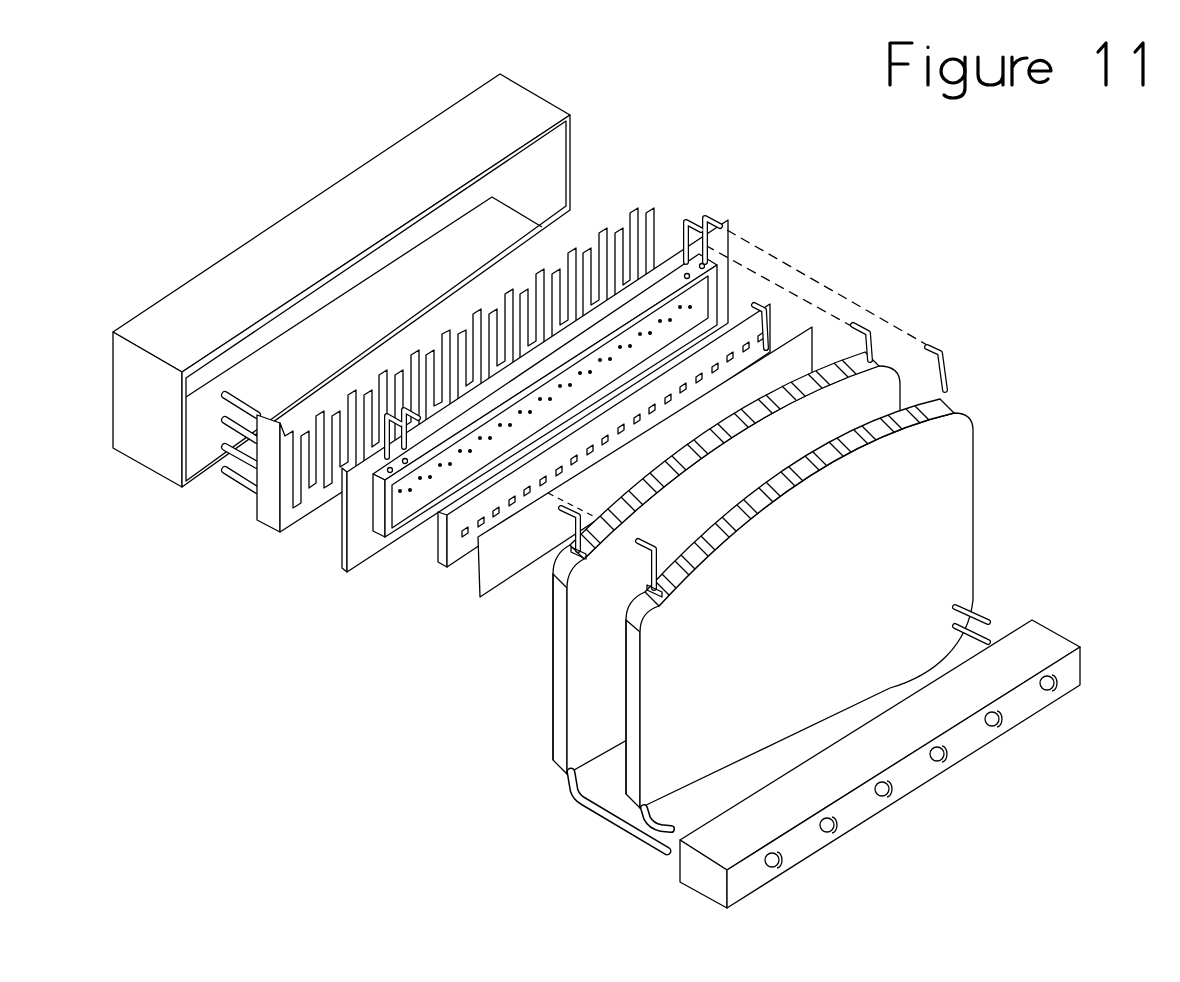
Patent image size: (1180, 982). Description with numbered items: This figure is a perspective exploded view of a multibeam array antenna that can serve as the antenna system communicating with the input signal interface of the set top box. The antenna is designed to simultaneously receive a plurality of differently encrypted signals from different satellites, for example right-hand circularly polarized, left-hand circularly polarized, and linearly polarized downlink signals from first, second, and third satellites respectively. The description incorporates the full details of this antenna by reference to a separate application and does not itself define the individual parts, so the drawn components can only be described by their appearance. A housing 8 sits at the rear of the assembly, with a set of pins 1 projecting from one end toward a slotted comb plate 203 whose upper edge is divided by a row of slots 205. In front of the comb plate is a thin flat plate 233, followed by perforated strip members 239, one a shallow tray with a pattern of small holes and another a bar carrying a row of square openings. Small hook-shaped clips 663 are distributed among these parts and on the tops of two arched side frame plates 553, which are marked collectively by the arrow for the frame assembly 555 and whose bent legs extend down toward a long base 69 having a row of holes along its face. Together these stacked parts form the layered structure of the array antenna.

The housing 8 is at (370, 185).
The pins 1 is at (243, 403).
The comb plate 203 is at (635, 178).
The slots 205 is at (652, 205).
The plate 233 is at (358, 580).
The perforated strip 239 is at (458, 540).
The clips 663 is at (612, 532).
The side frame plate 553 is at (940, 350).
The frame assembly 555 is at (985, 500).
The base 69 is at (910, 772).